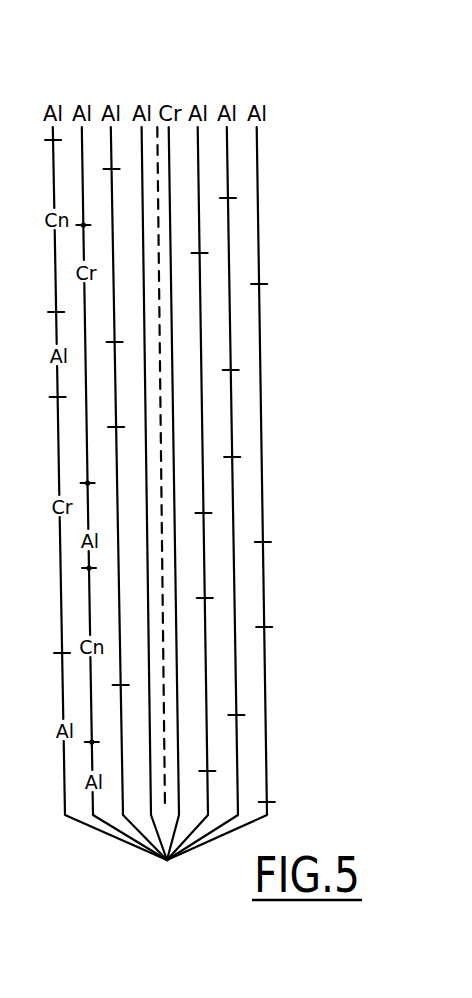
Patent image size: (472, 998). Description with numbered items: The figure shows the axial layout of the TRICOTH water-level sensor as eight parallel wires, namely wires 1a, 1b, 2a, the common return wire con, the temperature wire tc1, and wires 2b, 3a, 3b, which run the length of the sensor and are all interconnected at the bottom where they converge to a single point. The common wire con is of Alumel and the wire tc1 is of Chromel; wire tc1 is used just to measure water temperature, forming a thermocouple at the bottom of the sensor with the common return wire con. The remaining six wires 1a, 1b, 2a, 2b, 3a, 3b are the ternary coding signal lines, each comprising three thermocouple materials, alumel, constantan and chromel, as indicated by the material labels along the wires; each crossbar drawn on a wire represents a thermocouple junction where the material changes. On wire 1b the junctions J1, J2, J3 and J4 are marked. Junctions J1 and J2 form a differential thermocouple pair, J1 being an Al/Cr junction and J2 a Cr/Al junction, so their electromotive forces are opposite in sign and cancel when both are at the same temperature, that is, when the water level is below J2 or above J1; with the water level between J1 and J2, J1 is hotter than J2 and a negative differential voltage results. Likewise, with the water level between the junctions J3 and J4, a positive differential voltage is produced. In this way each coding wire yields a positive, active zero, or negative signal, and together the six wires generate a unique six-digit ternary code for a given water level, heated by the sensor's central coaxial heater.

The wire 1a is at (52, 97).
The wire 1b is at (81, 97).
The wire 2a is at (110, 97).
The wire 2b is at (197, 97).
The wire 3a is at (226, 97).
The wire 3b is at (256, 97).
The common return wire con is at (141, 97).
The wire tc1 is at (168, 97).
The junction J1 is at (93, 210).
The junction J2 is at (97, 471).
The junction J3 is at (99, 581).
The junction J4 is at (100, 730).